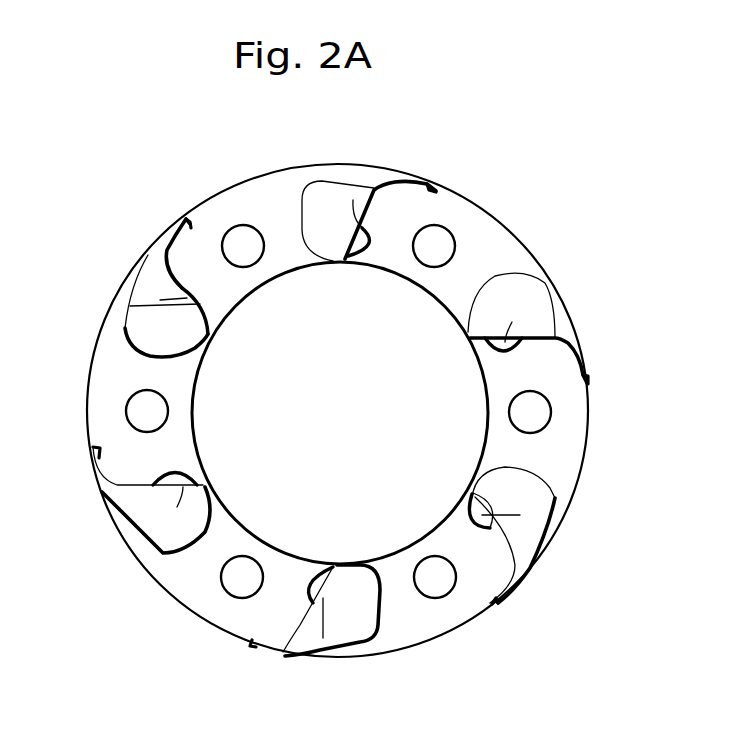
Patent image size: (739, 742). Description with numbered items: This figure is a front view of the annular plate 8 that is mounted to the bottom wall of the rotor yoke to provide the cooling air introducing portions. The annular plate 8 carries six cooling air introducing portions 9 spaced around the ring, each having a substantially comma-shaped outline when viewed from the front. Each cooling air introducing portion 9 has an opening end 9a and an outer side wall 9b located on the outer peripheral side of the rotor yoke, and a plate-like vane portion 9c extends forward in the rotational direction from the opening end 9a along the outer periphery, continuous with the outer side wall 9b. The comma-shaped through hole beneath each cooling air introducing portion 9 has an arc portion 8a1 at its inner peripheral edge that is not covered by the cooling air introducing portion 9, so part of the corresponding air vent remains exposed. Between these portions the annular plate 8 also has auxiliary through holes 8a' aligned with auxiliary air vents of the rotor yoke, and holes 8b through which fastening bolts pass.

The annular plate 8 is at (481, 201).
The auxiliary through hole 8a' is at (391, 395).
The arc portion 8a1 is at (353, 200).
The hole 8b is at (440, 242).
The cooling air introducing portion 9 is at (302, 193).
The opening end 9a is at (366, 230).
The outer side wall 9b is at (337, 181).
The vane portion 9c is at (431, 186).